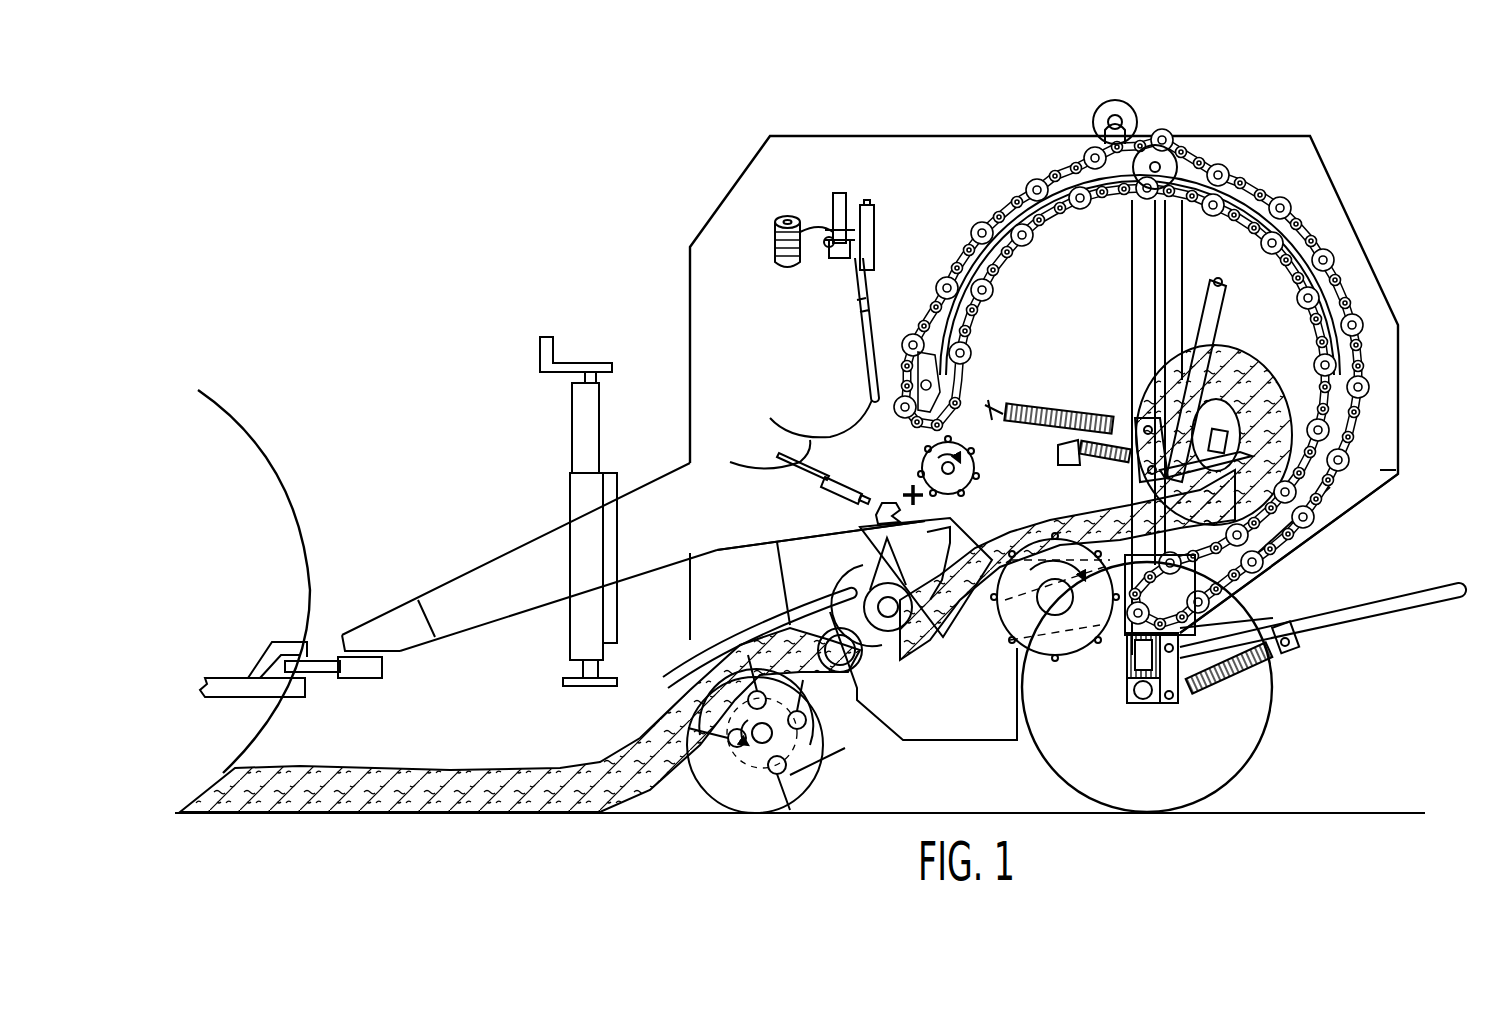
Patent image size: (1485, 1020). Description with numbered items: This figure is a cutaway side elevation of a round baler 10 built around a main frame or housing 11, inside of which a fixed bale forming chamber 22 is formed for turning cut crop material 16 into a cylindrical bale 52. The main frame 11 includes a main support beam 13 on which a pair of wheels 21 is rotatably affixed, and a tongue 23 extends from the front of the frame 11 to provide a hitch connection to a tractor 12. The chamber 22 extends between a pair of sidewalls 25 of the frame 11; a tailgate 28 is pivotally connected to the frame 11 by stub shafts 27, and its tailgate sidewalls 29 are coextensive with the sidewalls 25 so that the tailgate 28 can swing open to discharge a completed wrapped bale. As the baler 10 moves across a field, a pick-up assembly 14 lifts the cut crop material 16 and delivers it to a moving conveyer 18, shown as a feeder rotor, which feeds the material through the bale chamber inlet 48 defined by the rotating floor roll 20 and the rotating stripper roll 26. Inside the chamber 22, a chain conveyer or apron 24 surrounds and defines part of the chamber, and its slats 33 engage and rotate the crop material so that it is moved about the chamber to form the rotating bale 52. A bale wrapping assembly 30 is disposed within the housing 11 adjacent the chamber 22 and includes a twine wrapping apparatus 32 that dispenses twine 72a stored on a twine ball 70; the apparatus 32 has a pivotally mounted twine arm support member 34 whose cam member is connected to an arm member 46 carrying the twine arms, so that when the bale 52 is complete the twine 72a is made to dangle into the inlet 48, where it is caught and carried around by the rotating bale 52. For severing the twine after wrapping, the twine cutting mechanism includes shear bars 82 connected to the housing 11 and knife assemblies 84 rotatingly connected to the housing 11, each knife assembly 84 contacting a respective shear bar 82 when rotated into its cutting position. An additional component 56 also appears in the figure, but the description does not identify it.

The round baler 10 is at (614, 226).
The main frame or housing 11 is at (866, 128).
The tractor 12 is at (231, 376).
The main support beam 13 is at (1128, 665).
The pick-up assembly 14 is at (735, 790).
The cut crop material 16 is at (405, 766).
The conveyer 18 is at (862, 580).
The floor roll 20 is at (1004, 652).
The wheels 21 is at (1265, 727).
The bale forming chamber 22 is at (1080, 303).
The tongue 23 is at (497, 603).
The chain conveyer (apron) 24 is at (1268, 270).
The sidewalls 25 is at (952, 174).
The stripper roll 26 is at (972, 466).
The stub shafts 27 is at (1166, 166).
The tailgate 28 is at (1336, 524).
The tailgate sidewalls 29 is at (1298, 174).
The bale wrapping assembly 30 is at (840, 387).
The twine wrapping apparatus 32 is at (828, 188).
The slats 33 is at (1331, 258).
The twine arm support member 34 is at (775, 462).
The arm member 46 is at (836, 482).
The bale chamber inlet 48 is at (1024, 518).
The bale 52 is at (1286, 414).
The tensioning linkage 56 is at (1118, 380).
The twine ball 70 is at (778, 222).
The twine strand 72a is at (887, 488).
The shear bars 82 is at (875, 522).
The knife assemblies 84 is at (942, 505).